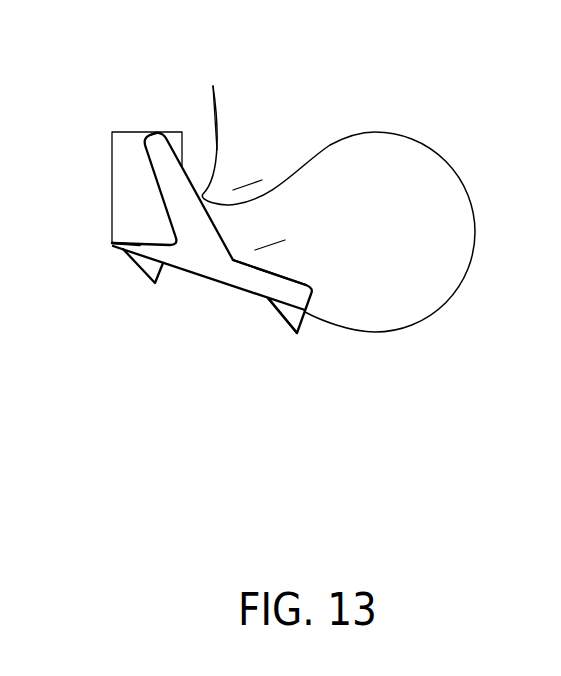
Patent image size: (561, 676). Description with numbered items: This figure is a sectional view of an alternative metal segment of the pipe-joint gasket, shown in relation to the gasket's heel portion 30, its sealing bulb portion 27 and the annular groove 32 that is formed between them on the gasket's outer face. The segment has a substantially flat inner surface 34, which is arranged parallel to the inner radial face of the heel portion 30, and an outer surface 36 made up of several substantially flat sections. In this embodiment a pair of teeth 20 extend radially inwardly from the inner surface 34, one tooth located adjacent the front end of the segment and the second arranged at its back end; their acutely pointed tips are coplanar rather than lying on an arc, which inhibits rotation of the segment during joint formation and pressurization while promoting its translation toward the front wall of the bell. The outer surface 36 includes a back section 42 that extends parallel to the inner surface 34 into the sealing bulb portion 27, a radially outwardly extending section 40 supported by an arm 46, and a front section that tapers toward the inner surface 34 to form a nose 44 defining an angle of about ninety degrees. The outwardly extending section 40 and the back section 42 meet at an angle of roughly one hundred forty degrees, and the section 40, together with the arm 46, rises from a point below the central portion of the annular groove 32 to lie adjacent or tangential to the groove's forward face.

The teeth 20 is at (143, 268).
The sealing bulb portion 27 is at (473, 210).
The heel portion 30 is at (118, 195).
The annular groove 32 is at (250, 182).
The inner surface 34 is at (207, 280).
The outer surface 36 is at (275, 235).
The radially outwardly extending section 40 is at (208, 104).
The back section 42 is at (290, 276).
The nose 44 is at (110, 243).
The arm 46 is at (148, 145).